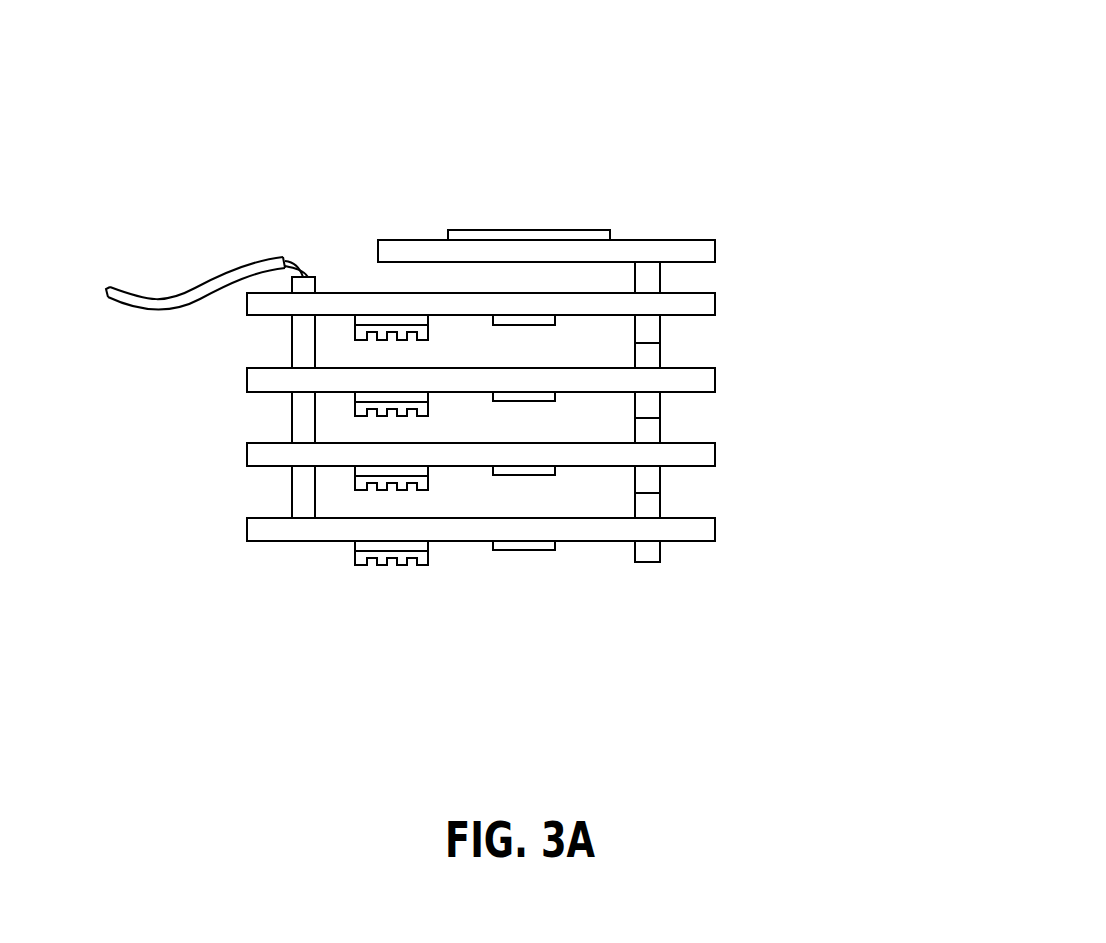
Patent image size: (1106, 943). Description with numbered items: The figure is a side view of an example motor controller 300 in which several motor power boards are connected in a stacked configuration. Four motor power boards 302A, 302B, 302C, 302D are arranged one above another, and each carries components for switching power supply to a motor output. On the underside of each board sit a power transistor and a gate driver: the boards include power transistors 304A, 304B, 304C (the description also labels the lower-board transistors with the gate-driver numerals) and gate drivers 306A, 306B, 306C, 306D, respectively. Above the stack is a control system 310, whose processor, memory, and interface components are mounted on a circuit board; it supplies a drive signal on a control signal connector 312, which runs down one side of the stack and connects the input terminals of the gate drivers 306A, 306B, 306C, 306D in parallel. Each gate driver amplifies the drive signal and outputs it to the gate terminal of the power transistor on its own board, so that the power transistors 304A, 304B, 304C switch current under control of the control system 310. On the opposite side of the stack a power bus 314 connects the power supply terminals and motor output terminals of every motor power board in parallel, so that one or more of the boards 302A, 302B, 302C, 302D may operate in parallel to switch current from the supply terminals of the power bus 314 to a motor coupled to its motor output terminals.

The motor controller 300 is at (1015, 73).
The motor power board 302A is at (717, 305).
The motor power board 302B is at (717, 380).
The motor power board 302C is at (717, 455).
The motor power board 302D is at (717, 530).
The power transistor 304A is at (430, 335).
The power transistor 304B is at (430, 408).
The power transistor 304C is at (430, 482).
The gate driver 306A is at (555, 322).
The gate driver 306B is at (555, 396).
The gate driver 306C is at (555, 470).
The gate driver 306D is at (555, 545).
The control system 310 is at (563, 230).
The control signal connector 312 is at (660, 555).
The power bus 314 is at (291, 360).